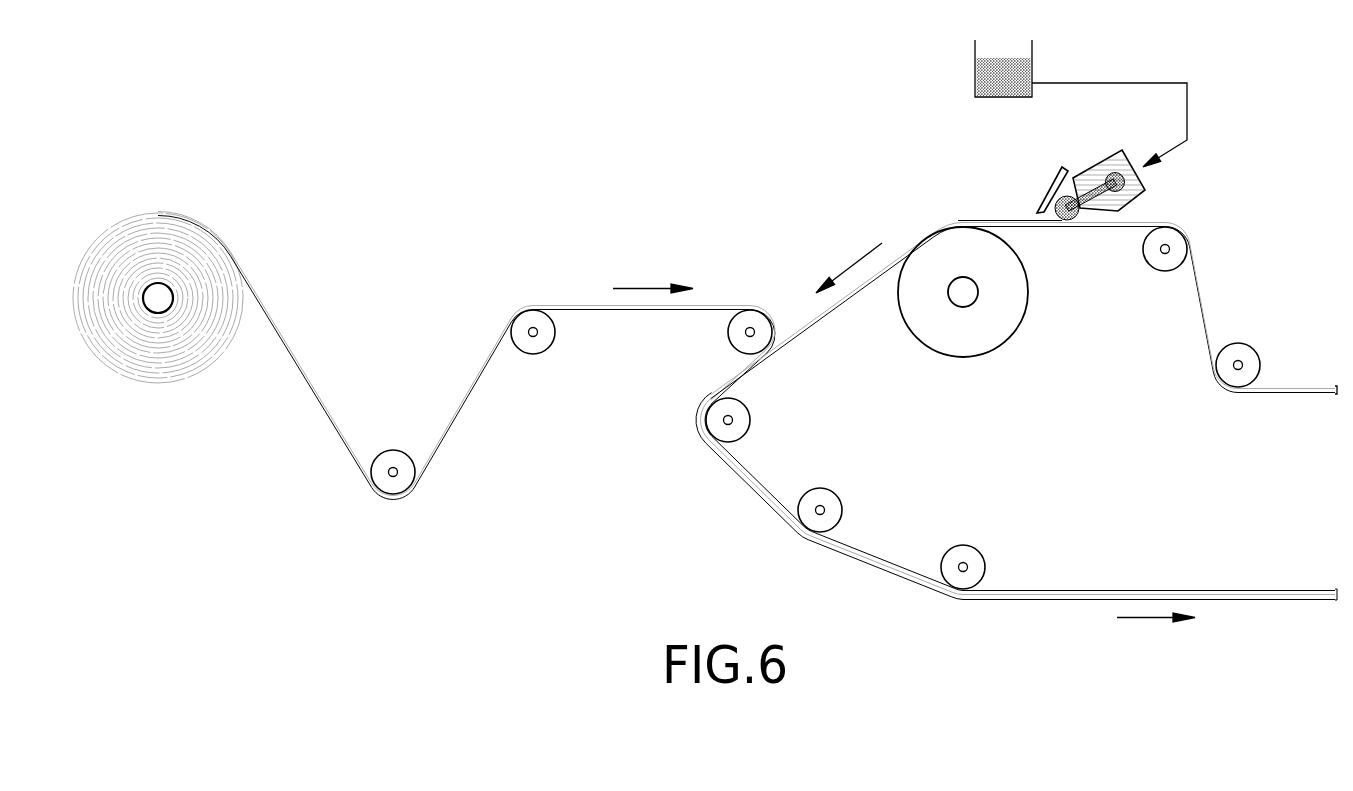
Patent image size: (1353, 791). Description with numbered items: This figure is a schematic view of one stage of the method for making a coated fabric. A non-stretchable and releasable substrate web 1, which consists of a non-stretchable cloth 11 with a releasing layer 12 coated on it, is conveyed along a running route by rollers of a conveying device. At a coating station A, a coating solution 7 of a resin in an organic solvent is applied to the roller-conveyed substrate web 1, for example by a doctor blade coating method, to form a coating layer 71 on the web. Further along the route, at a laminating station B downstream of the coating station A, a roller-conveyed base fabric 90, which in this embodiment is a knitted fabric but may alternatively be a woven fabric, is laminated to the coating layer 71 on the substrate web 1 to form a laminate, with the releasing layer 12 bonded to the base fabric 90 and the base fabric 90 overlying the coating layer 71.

The base fabric 90 is at (710, 306).
The non-stretchable and releasable substrate web 1 is at (1028, 292).
The non-stretchable cloth 11 is at (1088, 227).
The releasing layer 12 is at (1135, 221).
The coating solution 7 is at (1068, 198).
The coating layer 71 is at (1000, 218).
The coating station A is at (1063, 248).
The laminating station B is at (784, 380).